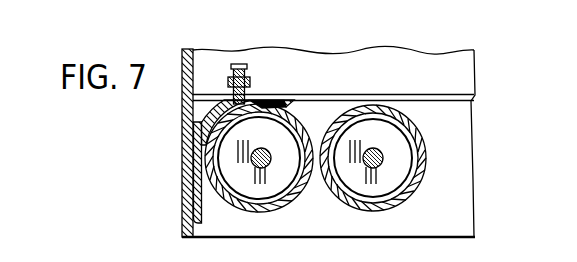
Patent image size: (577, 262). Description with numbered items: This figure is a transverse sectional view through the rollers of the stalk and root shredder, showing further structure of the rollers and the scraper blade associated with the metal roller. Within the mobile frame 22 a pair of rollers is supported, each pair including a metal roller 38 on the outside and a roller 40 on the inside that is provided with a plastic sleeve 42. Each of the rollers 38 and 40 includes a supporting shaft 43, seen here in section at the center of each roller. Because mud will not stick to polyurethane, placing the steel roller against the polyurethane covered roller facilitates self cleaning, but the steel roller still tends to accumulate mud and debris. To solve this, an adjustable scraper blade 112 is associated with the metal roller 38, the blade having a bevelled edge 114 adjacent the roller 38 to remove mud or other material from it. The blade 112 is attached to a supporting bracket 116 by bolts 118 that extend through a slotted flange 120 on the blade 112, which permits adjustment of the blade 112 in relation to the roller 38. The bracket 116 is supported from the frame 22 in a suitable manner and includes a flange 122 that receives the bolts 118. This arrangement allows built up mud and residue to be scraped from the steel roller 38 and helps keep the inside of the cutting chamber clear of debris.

The mobile frame 22 is at (474, 183).
The metal roller 38 is at (192, 185).
The roller 40 is at (425, 160).
The plastic sleeve 42 is at (421, 128).
The supporting shaft 43 is at (382, 164).
The scraper blade 112 is at (266, 98).
The bevelled edge 114 is at (282, 99).
The supporting bracket 116 is at (197, 121).
The bolts 118 is at (251, 64).
The slotted flange 120 is at (243, 64).
The flange 122 is at (233, 63).